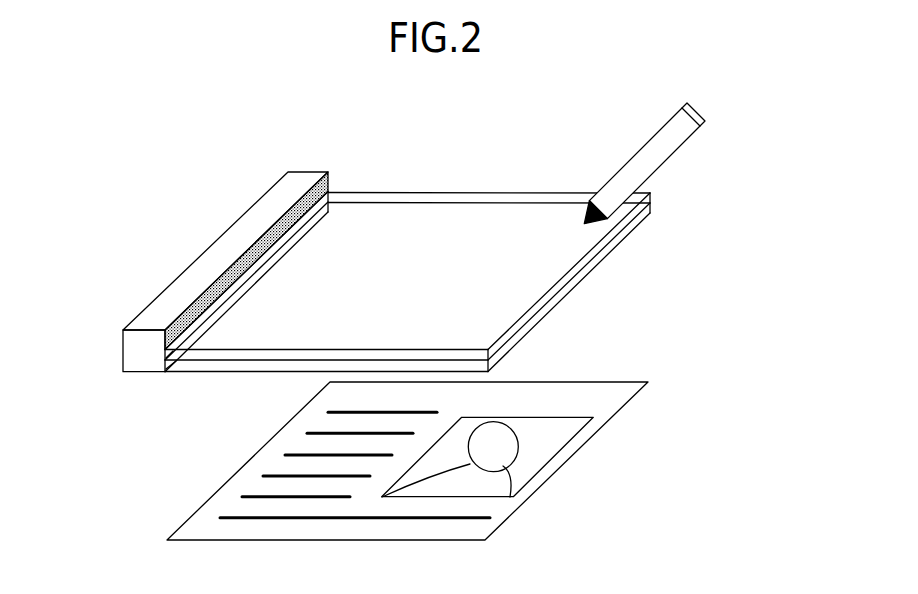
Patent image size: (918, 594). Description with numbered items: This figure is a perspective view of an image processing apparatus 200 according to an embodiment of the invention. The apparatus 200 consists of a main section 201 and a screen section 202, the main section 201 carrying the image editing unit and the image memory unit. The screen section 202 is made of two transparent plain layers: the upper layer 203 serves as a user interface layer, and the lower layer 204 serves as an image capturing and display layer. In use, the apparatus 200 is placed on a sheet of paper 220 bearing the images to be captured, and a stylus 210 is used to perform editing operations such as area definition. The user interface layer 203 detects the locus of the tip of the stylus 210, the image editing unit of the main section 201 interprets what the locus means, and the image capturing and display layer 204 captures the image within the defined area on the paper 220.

The image processing apparatus 200 is at (330, 192).
The main section 201 is at (176, 282).
The screen section 202 is at (660, 193).
The user interface layer 203 is at (557, 292).
The image capturing and display layer 204 is at (543, 313).
The stylus 210 is at (696, 110).
The sheet of paper 220 is at (648, 382).